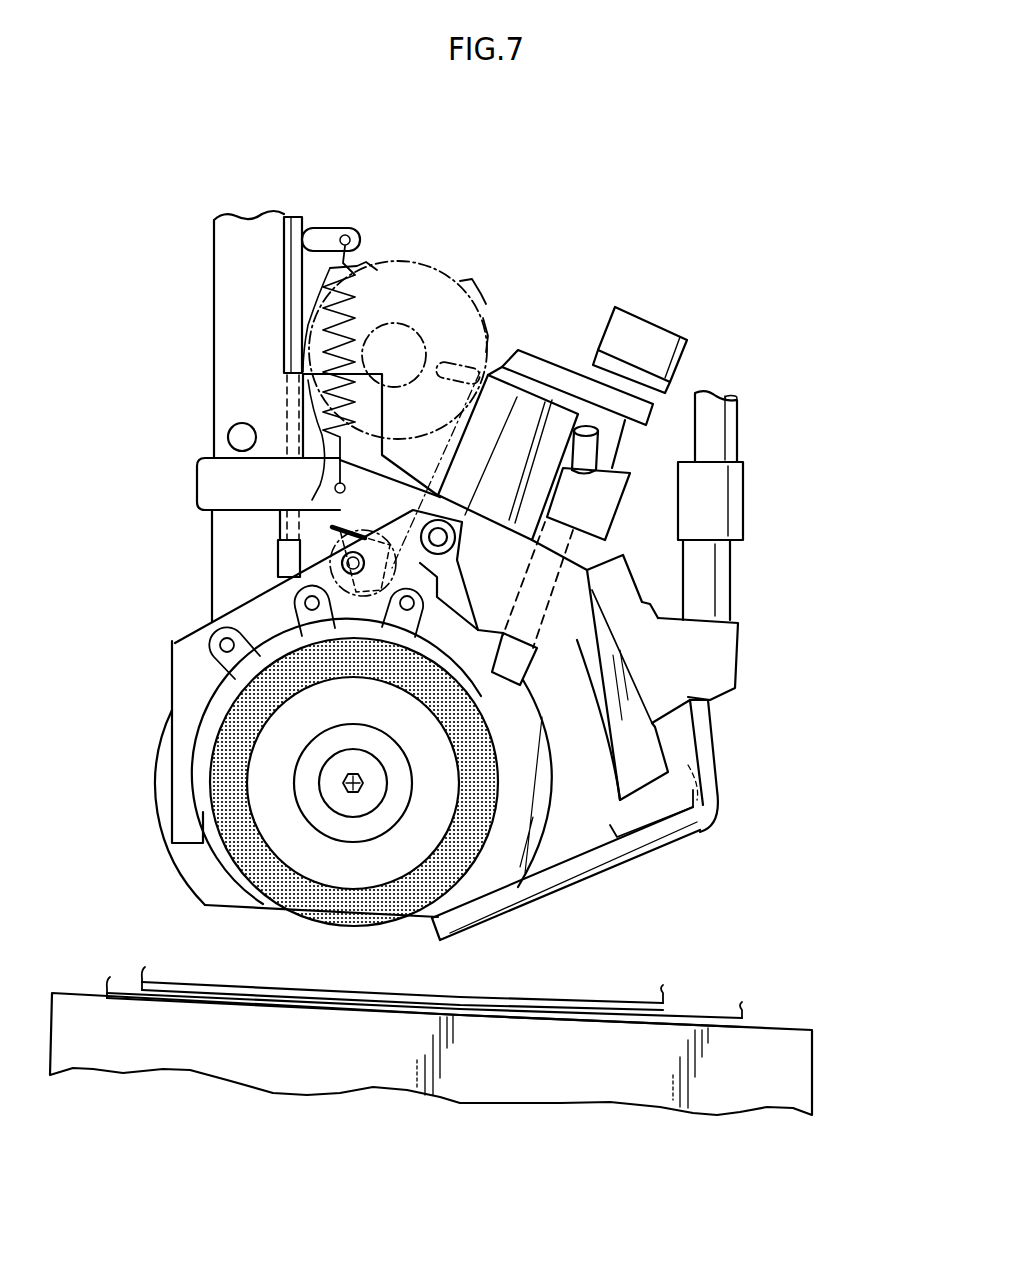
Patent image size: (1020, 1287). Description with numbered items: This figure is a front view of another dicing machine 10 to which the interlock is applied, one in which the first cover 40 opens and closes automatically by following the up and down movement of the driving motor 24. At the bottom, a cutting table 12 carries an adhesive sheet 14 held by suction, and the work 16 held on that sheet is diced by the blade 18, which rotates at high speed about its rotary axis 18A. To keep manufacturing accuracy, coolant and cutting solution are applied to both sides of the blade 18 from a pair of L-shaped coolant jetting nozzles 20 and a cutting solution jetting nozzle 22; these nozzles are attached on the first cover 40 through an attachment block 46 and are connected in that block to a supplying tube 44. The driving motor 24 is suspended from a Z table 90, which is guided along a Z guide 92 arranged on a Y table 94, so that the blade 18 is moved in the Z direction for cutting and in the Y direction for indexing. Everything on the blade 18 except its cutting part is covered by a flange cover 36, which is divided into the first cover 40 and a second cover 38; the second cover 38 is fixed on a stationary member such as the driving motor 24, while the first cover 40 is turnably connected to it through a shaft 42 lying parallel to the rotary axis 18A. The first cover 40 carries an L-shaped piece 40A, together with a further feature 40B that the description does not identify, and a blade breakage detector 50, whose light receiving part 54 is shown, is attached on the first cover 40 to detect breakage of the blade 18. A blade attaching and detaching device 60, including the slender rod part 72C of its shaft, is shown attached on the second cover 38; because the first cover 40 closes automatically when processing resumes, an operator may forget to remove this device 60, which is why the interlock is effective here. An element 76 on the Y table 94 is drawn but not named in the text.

The dicing machine 10 is at (581, 232).
The cutting table 12 is at (787, 1040).
The adhesive sheet 14 is at (700, 1022).
The work 16 is at (571, 1006).
The blade 18 is at (236, 847).
The rotary axis 18A is at (342, 782).
The coolant jetting nozzles 20 is at (670, 835).
The cutting solution jetting nozzle 22 is at (702, 752).
The driving motor 24 is at (161, 787).
The flange cover 36 is at (234, 600).
The second cover 38 is at (187, 664).
The first cover 40 is at (604, 655).
The L-shaped piece 40A is at (338, 520).
The bracket arm 40B is at (240, 460).
The shaft 42 is at (442, 548).
The supplying tube 44 is at (736, 449).
The attachment block 46 is at (738, 668).
The blade breakage detector 50 is at (625, 458).
The light receiving part 54 is at (524, 665).
The blade attaching and detaching device 60 is at (437, 268).
The rod part 72C is at (350, 558).
The hole 76 is at (219, 429).
The Z table 90 is at (303, 420).
The Z guide 92 is at (304, 217).
The Y table 94 is at (226, 302).